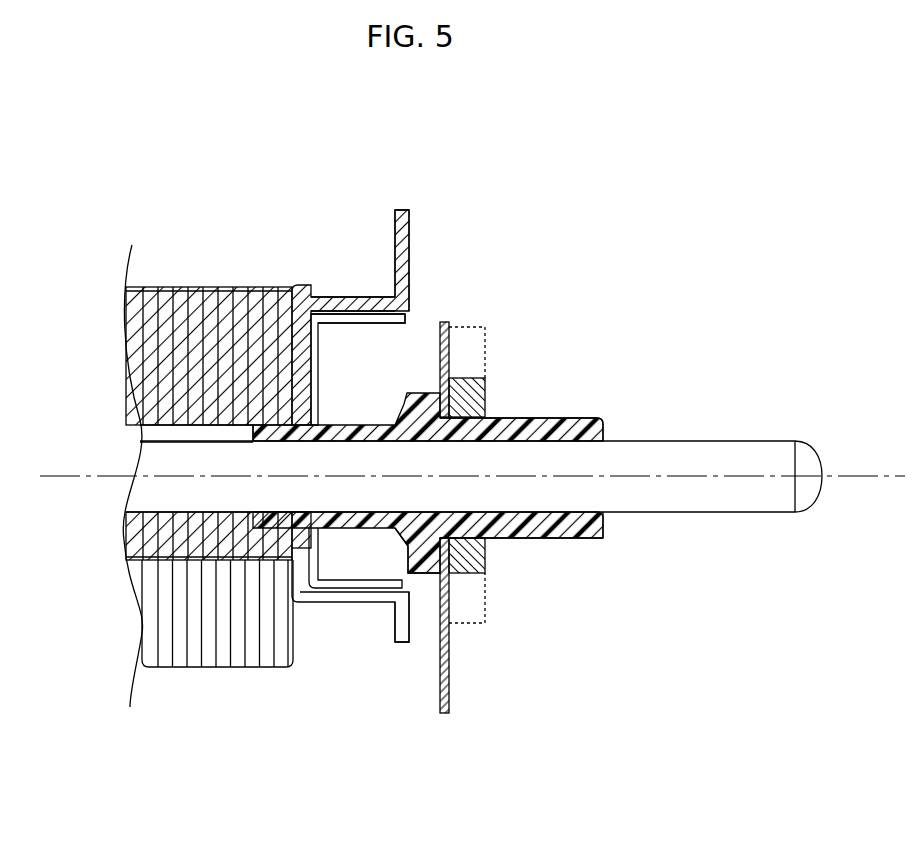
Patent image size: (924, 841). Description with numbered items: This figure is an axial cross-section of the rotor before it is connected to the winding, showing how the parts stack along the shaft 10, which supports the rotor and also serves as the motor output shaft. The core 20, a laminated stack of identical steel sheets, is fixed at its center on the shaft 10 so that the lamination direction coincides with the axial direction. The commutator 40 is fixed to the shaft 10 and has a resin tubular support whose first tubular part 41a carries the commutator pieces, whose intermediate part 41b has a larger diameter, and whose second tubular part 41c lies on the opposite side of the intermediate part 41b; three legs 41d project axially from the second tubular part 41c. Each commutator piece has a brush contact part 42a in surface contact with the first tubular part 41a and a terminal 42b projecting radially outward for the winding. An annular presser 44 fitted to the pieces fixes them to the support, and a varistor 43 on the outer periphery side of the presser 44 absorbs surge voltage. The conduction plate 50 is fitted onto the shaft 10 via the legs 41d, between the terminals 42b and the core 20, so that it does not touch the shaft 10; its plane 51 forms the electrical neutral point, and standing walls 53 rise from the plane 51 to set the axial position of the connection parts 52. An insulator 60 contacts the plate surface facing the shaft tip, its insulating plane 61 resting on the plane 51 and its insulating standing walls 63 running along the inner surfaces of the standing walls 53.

The shaft 10 is at (773, 432).
The core 20 is at (208, 678).
The commutator 40 is at (373, 522).
The first tubular part 41a is at (605, 430).
The intermediate part 41b is at (440, 637).
The second tubular part 41c is at (268, 402).
The legs 41d is at (287, 440).
The brush contact part 42a is at (533, 541).
The terminal 42b is at (447, 321).
The varistor 43 is at (489, 335).
The presser 44 is at (488, 398).
The conduction plate 50 is at (374, 451).
The plane 51 is at (290, 357).
The connection parts 52 is at (413, 229).
The standing walls 53 is at (358, 297).
The insulator 60 is at (344, 568).
The insulating plane 61 is at (370, 369).
The insulating standing walls 63 is at (365, 324).